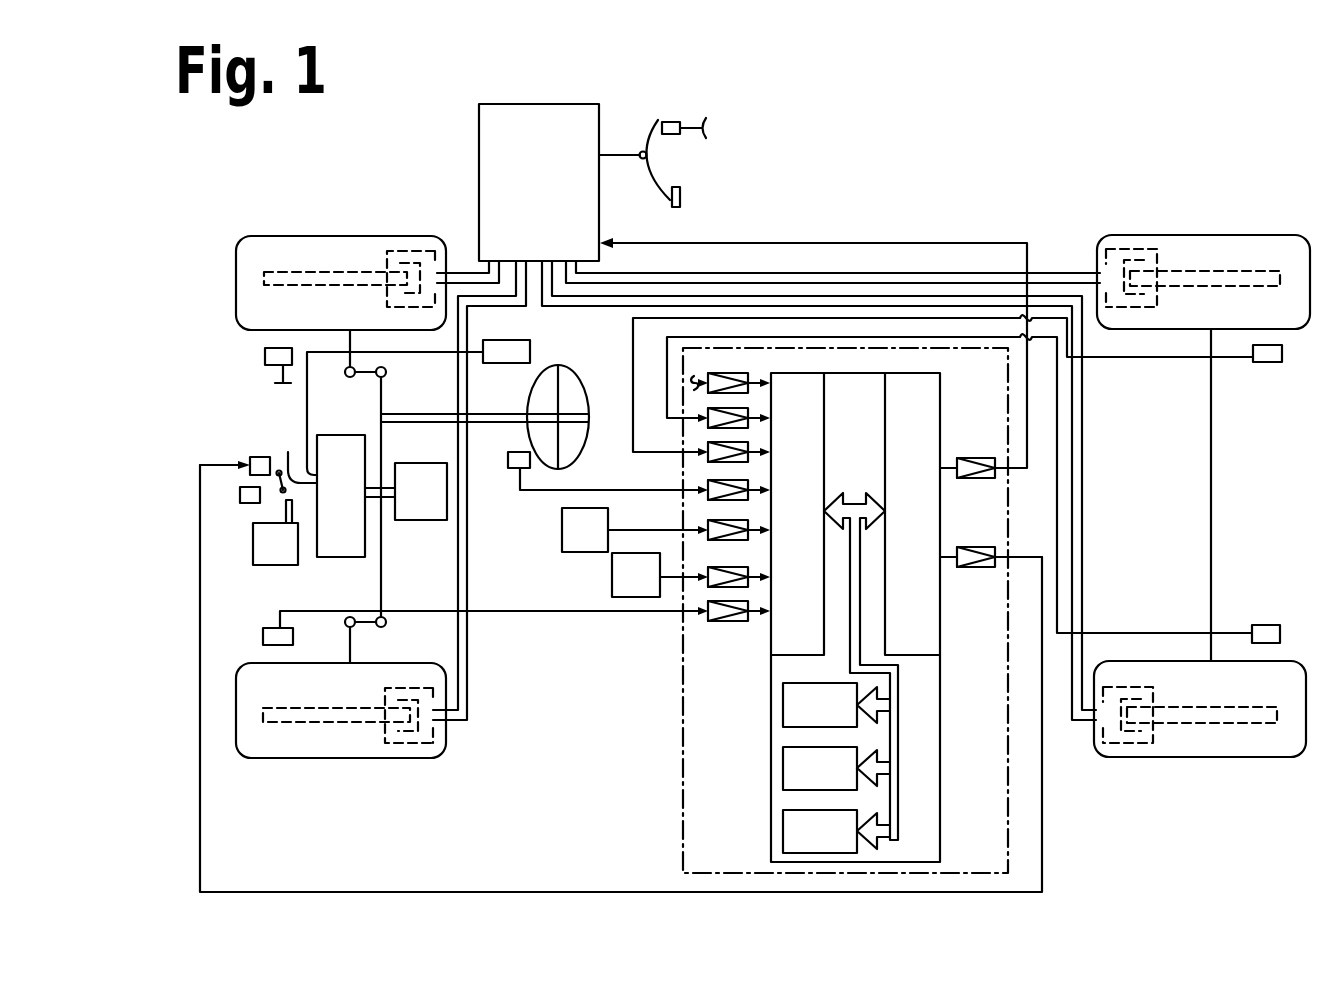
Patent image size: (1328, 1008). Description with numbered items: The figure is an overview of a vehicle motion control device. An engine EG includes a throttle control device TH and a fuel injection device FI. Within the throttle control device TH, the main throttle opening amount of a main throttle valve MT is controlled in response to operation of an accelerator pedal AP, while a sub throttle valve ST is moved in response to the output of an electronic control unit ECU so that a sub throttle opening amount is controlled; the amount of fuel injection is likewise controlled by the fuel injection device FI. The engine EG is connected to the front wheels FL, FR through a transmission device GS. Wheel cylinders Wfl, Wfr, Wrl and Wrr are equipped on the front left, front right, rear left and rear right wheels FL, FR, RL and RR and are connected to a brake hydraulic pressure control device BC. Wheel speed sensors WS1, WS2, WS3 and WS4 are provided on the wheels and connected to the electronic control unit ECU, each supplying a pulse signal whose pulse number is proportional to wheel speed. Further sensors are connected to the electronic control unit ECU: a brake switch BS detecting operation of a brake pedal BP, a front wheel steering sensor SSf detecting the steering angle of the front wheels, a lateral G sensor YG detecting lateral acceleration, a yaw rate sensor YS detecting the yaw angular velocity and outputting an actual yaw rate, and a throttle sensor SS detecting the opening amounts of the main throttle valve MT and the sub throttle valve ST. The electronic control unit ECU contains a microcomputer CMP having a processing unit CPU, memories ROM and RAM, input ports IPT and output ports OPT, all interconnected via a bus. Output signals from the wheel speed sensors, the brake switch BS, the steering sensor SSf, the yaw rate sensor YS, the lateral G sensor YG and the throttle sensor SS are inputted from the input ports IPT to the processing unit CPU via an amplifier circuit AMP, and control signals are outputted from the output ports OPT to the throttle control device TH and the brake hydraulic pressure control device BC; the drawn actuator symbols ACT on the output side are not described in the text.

The brake hydraulic pressure control device BC is at (479, 130).
The brake pedal BP is at (662, 180).
The brake switch BS is at (676, 122).
The front right wheel FR is at (275, 236).
The wheel cylinder Wfr is at (415, 252).
The front left wheel FL is at (285, 760).
The wheel cylinder Wfl is at (416, 744).
The rear right wheel RR is at (1228, 235).
The wheel cylinder Wrr is at (1118, 253).
The rear left wheel RL is at (1222, 757).
The wheel cylinder Wrl is at (1122, 744).
The wheel speed sensor WS1 is at (263, 637).
The wheel speed sensor WS2 is at (265, 355).
The wheel speed sensor WS3 is at (1267, 625).
The wheel speed sensor WS4 is at (1266, 363).
The front wheel steering sensor SSf is at (508, 468).
The accelerator pedal AP is at (530, 352).
The engine EG is at (340, 437).
The transmission device GS is at (406, 491).
The throttle control device TH is at (280, 455).
The main throttle valve MT is at (290, 494).
The sub throttle valve ST is at (250, 458).
The throttle sensor SS is at (240, 495).
The fuel injection device FI is at (275, 532).
The yaw rate sensor YS is at (631, 530).
The lateral G sensor YG is at (656, 575).
The electronic control unit ECU is at (683, 767).
The amplifier circuit AMP is at (720, 622).
The microcomputer CMP is at (953, 631).
The input ports IPT is at (818, 417).
The output ports OPT is at (937, 417).
The processing unit CPU is at (836, 705).
The memory ROM is at (836, 768).
The memory RAM is at (836, 831).
The actuator (solenoid valve) ACT is at (978, 458).